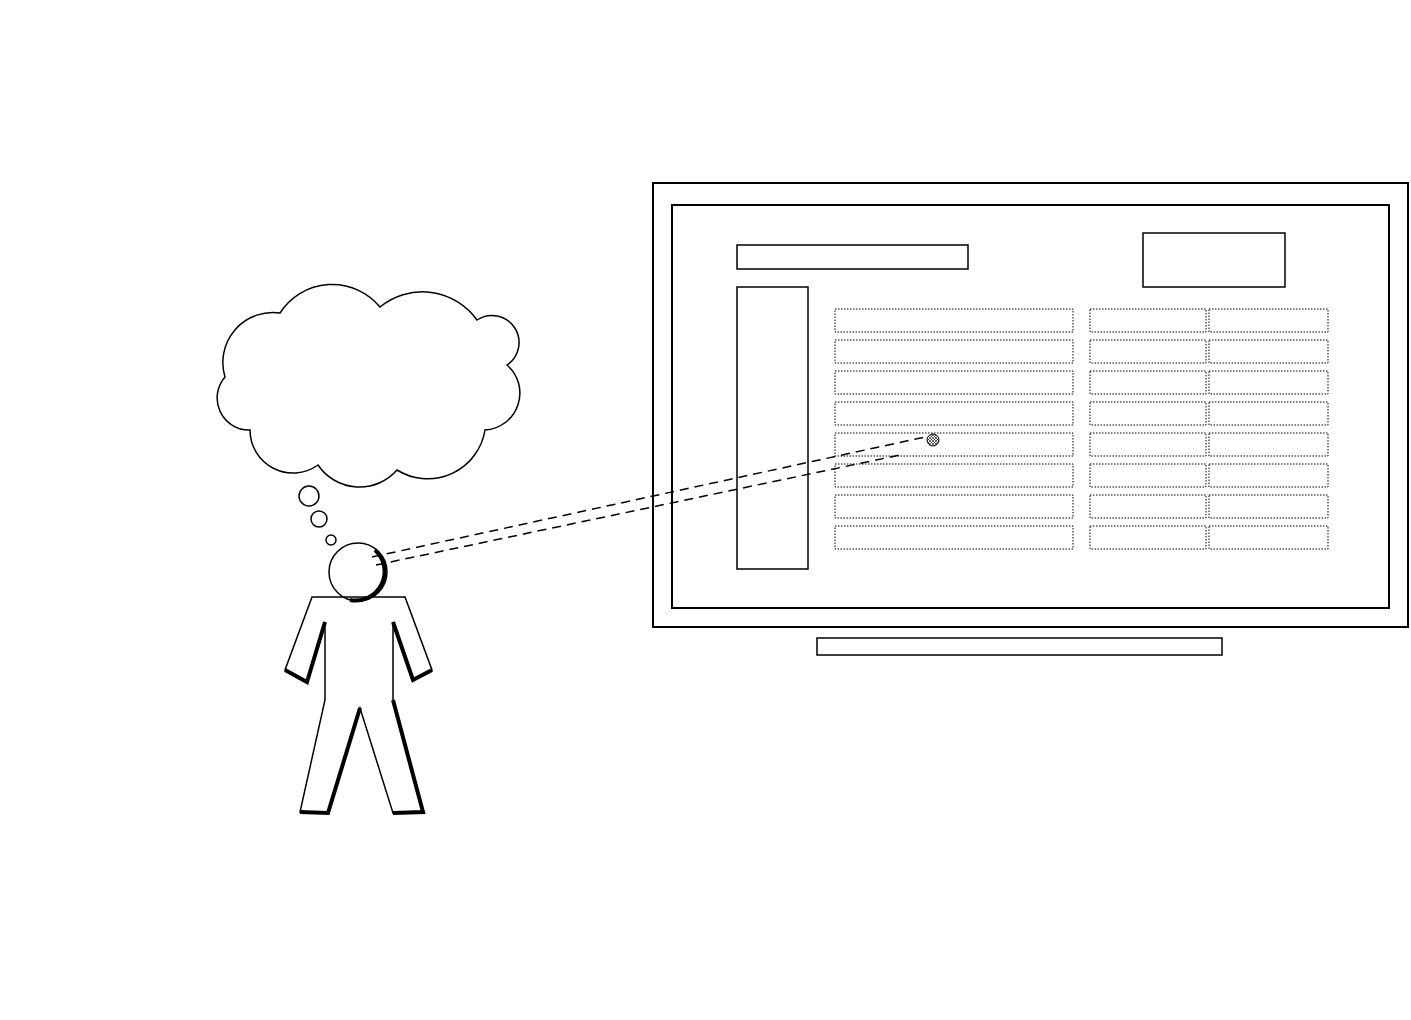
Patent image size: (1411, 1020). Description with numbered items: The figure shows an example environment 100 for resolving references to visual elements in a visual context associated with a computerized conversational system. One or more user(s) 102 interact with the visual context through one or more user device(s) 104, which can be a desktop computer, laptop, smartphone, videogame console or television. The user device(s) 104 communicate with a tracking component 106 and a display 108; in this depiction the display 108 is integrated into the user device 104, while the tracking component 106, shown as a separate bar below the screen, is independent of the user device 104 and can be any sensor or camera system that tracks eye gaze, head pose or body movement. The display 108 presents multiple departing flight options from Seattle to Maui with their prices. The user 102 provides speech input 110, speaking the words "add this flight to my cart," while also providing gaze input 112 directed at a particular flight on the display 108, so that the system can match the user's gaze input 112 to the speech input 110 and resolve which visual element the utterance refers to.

The environment 100 is at (162, 63).
The user 102 is at (315, 828).
The user device 104 is at (1163, 183).
The tracking component 106 is at (932, 657).
The display 108 is at (880, 205).
The speech input 110 is at (280, 310).
The gaze input 112 is at (633, 507).